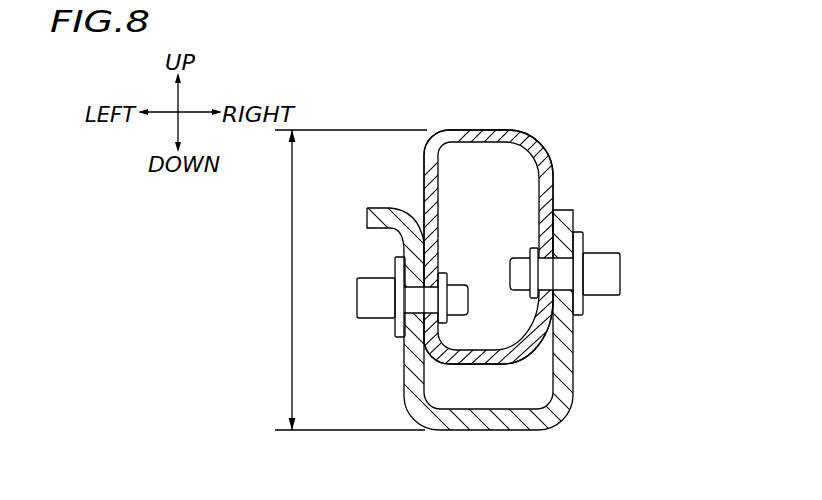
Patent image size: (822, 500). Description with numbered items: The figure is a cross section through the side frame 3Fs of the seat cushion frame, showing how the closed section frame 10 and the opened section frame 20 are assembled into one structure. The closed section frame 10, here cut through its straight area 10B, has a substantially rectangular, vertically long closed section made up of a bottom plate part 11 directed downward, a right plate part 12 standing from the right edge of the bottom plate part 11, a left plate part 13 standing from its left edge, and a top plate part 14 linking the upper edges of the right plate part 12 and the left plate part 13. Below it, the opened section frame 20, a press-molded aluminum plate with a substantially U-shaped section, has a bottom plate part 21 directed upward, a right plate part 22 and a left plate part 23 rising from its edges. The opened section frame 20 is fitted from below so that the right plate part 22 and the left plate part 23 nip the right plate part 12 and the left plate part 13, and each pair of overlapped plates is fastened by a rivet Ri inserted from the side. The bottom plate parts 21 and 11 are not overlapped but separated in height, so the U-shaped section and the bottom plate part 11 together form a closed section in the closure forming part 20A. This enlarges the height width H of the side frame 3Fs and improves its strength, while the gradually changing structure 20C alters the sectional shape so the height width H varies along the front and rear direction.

The side frame 3Fs is at (536, 107).
The closed section frame 10 is at (541, 160).
The straight area 10B is at (492, 226).
The bottom plate part 11 is at (494, 357).
The right plate part 12 is at (550, 210).
The left plate part 13 is at (423, 204).
The top plate part 14 is at (483, 131).
The opened section frame 20 is at (568, 222).
The closure forming part 20A is at (379, 302).
The gradually changing structure 20C is at (488, 441).
The bottom plate part 21 is at (480, 420).
The right plate part 22 is at (564, 352).
The left plate part 23 is at (412, 353).
The rivet Ri is at (372, 297).
The height width H is at (347, 280).